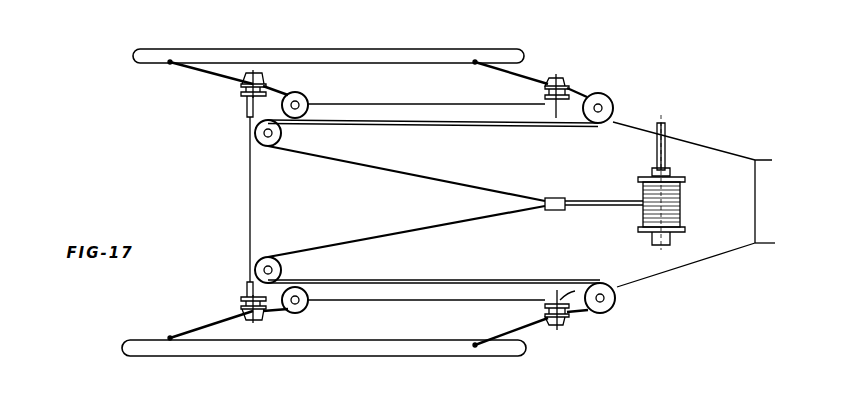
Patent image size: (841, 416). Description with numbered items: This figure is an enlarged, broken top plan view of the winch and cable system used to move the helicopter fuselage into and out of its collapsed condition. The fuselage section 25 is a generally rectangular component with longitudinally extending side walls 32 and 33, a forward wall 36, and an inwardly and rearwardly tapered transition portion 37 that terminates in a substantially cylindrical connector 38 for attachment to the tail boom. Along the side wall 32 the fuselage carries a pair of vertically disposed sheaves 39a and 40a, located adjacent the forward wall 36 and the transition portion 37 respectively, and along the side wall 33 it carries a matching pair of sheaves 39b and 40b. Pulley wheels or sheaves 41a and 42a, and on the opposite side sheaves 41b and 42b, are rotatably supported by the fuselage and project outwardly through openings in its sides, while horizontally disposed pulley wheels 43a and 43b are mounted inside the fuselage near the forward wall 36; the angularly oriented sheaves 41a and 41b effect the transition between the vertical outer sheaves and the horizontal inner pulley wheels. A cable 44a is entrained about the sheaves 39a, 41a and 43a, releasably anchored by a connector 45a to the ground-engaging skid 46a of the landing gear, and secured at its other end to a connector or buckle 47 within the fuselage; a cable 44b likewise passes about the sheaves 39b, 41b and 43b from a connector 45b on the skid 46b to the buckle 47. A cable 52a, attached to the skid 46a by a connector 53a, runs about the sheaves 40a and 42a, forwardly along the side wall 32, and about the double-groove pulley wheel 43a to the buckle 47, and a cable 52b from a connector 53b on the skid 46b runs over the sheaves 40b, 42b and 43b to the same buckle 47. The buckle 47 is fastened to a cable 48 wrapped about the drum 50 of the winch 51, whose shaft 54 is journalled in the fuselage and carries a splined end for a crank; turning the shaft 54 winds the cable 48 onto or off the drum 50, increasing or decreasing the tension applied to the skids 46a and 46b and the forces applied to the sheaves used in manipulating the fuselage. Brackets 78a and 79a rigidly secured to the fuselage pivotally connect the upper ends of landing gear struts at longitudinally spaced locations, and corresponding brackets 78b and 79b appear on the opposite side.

The fuselage section 25 is at (705, 268).
The side wall 32 is at (433, 300).
The side wall 33 is at (440, 106).
The forward wall 36 is at (250, 183).
The transition portion 37 is at (731, 249).
The cylindrical connector 38 is at (776, 243).
The sheave 39a is at (242, 306).
The sheave 39b is at (242, 96).
The sheave 40a is at (575, 318).
The sheave 40b is at (570, 86).
The pulley wheel or sheave 41a is at (307, 308).
The pulley wheel or sheave 41b is at (310, 97).
The sheave 42a is at (616, 298).
The sheave 42b is at (614, 109).
The pulley wheel 43a is at (264, 256).
The pulley wheel 43b is at (270, 147).
The cable 44a is at (198, 330).
The cable 44b is at (203, 72).
The connector 45a is at (172, 344).
The connector 45b is at (170, 58).
The ground-engaging skid 46a is at (286, 352).
The ground-engaging skid 46b is at (305, 50).
The connector or buckle 47 is at (550, 212).
The cable 48 is at (606, 208).
The drum 50 is at (686, 184).
The winch 51 is at (684, 216).
The cable 52a is at (548, 330).
The cable 52b is at (540, 72).
The connector 53a is at (478, 358).
The connector 53b is at (477, 59).
The shaft 54 is at (668, 152).
The bracket 78a is at (574, 290).
The upper bracket 78b is at (545, 100).
The bracket 79a is at (250, 284).
The upper post bracket 79b is at (250, 118).